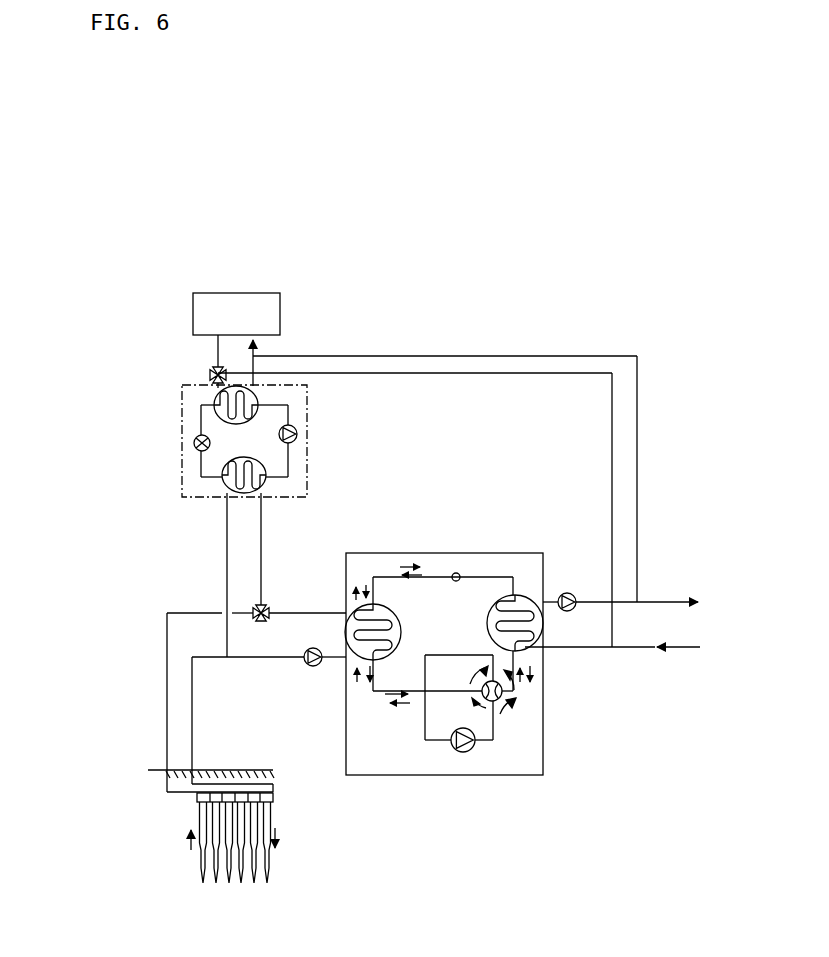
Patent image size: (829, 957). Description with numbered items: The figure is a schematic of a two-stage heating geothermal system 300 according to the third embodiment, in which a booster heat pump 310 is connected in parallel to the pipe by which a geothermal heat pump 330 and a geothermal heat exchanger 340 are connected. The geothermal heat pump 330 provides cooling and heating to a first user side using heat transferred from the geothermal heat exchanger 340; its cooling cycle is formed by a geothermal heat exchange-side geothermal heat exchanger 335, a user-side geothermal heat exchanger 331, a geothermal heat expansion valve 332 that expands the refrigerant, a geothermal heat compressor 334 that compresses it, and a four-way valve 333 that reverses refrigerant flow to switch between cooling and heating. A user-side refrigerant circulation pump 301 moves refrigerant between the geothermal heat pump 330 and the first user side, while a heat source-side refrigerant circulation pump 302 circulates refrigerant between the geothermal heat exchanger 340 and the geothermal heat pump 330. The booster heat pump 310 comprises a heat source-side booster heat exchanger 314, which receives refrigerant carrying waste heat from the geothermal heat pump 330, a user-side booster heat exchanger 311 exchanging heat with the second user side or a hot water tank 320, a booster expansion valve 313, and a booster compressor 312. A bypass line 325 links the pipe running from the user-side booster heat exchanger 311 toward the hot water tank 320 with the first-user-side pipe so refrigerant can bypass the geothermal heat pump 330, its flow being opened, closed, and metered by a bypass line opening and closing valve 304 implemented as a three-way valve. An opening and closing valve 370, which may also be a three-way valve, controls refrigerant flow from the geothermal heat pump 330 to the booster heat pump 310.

The two-stage heating geothermal system 300 is at (432, 306).
The user-side refrigerant circulation pump 301 is at (565, 593).
The heat source-side refrigerant circulation pump 302 is at (308, 665).
The bypass line opening and closing valve 304 is at (212, 370).
The booster heat pump 310 is at (100, 367).
The user-side booster heat exchanger 311 is at (216, 394).
The booster compressor 312 is at (279, 434).
The booster expansion valve 313 is at (195, 445).
The heat source-side booster heat exchanger 314 is at (236, 478).
The hot water tank 320 is at (240, 306).
The bypass line 325 is at (580, 355).
The geothermal heat pump 330 is at (642, 715).
The user-side geothermal heat exchanger 331 is at (528, 632).
The geothermal heat expansion valve 332 is at (459, 581).
The four-way valve 333 is at (503, 700).
The geothermal heat compressor 334 is at (472, 746).
The geothermal heat exchange-side geothermal heat exchanger 335 is at (375, 662).
The geothermal heat exchanger 340 is at (258, 812).
The opening and closing valve 370 is at (253, 608).